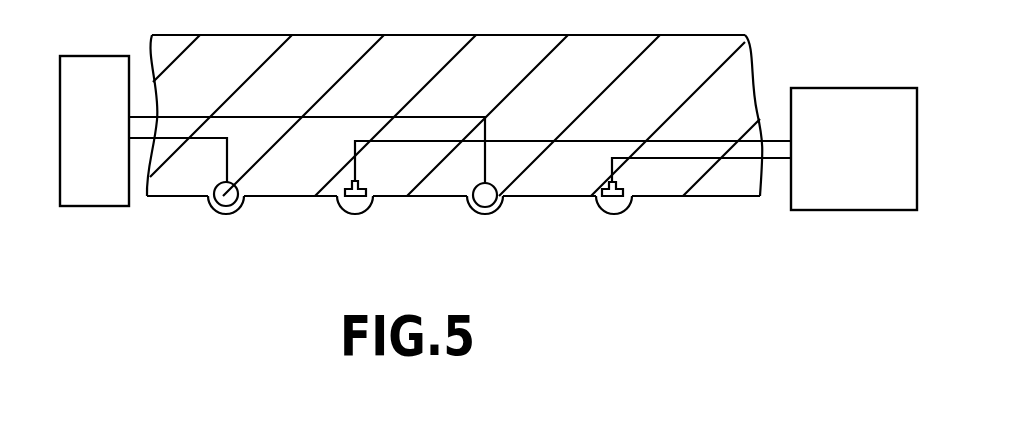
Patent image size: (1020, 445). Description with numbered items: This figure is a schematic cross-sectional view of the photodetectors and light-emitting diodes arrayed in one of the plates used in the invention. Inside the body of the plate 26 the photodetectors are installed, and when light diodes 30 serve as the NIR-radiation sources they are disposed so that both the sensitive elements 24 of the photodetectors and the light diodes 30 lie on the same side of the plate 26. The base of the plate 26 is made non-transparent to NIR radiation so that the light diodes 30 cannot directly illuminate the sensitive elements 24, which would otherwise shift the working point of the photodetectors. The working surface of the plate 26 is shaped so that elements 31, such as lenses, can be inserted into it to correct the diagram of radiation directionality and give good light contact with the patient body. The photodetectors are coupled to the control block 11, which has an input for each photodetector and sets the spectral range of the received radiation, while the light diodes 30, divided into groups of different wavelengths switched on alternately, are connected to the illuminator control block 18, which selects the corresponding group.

The control block 11 is at (868, 167).
The illuminator control block 18 is at (118, 142).
The sensitive elements 24 is at (367, 186).
The plate 26 is at (707, 76).
The light diodes 30 is at (238, 180).
The elements 31 is at (222, 212).